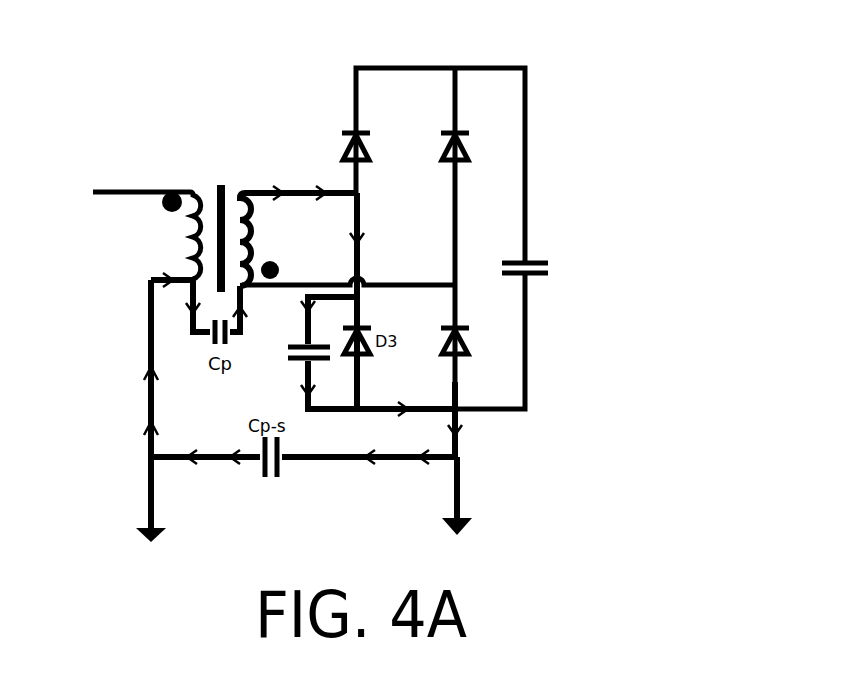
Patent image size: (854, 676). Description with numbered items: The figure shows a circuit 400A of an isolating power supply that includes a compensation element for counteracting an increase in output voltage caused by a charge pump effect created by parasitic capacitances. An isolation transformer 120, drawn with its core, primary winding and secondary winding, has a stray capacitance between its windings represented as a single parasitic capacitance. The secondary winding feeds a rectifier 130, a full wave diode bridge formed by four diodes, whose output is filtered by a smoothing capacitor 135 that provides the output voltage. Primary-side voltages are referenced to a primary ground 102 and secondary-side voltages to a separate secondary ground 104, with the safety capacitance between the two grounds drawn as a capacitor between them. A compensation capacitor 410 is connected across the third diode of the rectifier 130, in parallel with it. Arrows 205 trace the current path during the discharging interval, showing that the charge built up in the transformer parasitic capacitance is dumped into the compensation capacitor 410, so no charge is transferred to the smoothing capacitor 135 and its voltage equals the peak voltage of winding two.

The circuit 400A is at (736, 61).
The isolation transformer 120 is at (219, 172).
The rectifier 130 is at (328, 118).
The smoothing capacitor 135 is at (541, 250).
The arrows 205 is at (136, 372).
The compensation capacitor 410 is at (356, 356).
The primary ground 102 is at (126, 532).
The secondary ground 104 is at (435, 499).